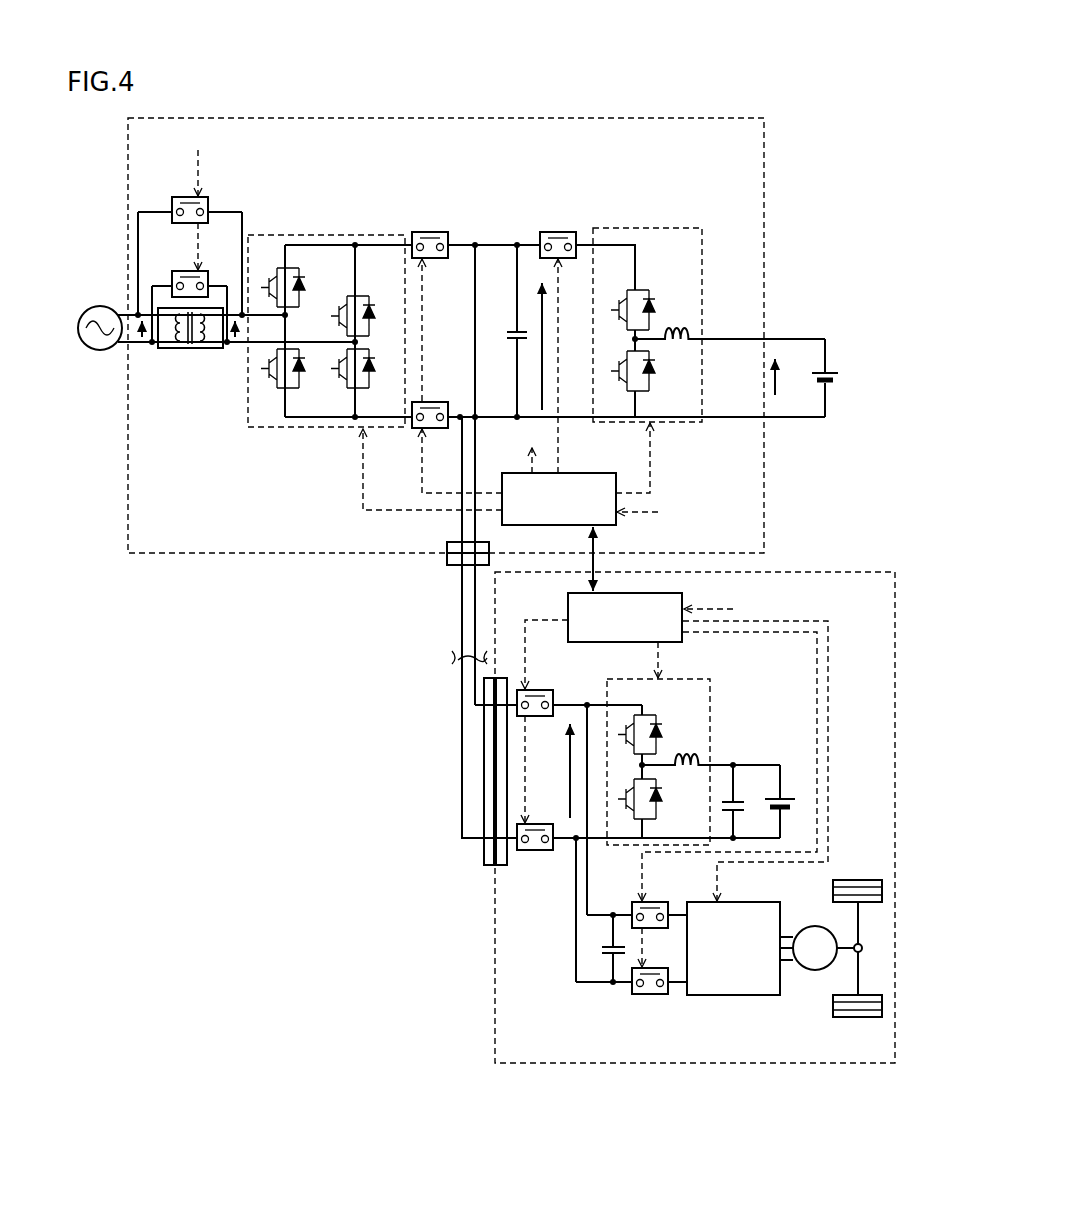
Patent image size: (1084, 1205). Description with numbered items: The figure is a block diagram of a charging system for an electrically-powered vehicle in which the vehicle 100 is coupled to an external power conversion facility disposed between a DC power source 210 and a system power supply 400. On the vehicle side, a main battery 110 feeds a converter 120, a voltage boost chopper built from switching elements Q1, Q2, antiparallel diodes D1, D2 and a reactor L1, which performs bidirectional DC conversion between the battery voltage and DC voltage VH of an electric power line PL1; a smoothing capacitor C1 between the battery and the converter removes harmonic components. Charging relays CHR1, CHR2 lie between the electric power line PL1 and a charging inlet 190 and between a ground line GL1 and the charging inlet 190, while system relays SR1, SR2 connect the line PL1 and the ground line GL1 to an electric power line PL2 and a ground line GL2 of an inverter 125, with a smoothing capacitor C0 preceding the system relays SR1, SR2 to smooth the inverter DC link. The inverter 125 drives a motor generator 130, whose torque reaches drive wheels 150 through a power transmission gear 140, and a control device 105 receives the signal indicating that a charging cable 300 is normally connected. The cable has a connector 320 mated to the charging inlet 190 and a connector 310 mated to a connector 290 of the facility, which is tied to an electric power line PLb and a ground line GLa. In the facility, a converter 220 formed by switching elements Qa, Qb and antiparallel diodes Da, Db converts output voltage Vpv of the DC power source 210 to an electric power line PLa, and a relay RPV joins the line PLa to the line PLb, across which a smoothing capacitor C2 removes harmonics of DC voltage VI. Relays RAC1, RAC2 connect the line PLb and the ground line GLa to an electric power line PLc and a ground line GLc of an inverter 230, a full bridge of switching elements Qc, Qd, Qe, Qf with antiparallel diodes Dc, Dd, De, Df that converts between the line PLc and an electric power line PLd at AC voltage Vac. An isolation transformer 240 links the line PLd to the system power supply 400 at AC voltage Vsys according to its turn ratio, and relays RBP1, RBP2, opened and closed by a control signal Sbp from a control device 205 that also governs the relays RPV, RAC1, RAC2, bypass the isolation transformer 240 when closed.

The system power supply 400 is at (100, 350).
The isolation transformer 240 is at (190, 348).
The inverter 230 is at (330, 309).
The converter 220 is at (709, 339).
The DC power source 210 is at (827, 373).
The control device 205 is at (558, 525).
The connector 290 is at (447, 548).
The connector 310 is at (447, 559).
The charging cable 300 is at (452, 660).
The electrically-powered vehicle 100 is at (772, 1064).
The control device 105 is at (628, 593).
The connector 320 is at (487, 866).
The charging inlet 190 is at (504, 866).
The converter 120 is at (693, 762).
The main battery 110 is at (786, 798).
The inverter 125 is at (735, 996).
The motor generator 130 is at (817, 972).
The power transmission gear 140 is at (876, 932).
The drive wheels 150 is at (873, 1018).
The relay RBP1 is at (186, 197).
The relay RBP2 is at (186, 271).
The relay RAC1 is at (431, 232).
The relay RAC2 is at (440, 402).
The relay RPV is at (553, 232).
The charging relay CHR1 is at (540, 690).
The charging relay CHR2 is at (547, 850).
The system relay SR1 is at (654, 929).
The system relay SR2 is at (638, 995).
The smoothing capacitor C0 is at (605, 957).
The smoothing capacitor C1 is at (740, 801).
The smoothing capacitor C2 is at (512, 339).
The reactor L1 is at (686, 746).
The switching element Q1 is at (618, 735).
The switching element Q2 is at (618, 800).
The antiparallel diode D1 is at (657, 723).
The antiparallel diode D2 is at (664, 806).
The switching element Qa is at (611, 311).
The switching element Qb is at (611, 372).
The antiparallel diode Da is at (652, 300).
The antiparallel diode Db is at (655, 375).
The switching element Qc is at (262, 288).
The switching element Qd is at (262, 370).
The switching element Qe is at (332, 316).
The switching element Qf is at (332, 370).
The antiparallel diode Dc is at (301, 292).
The antiparallel diode Dd is at (301, 374).
The antiparallel diode De is at (372, 306).
The antiparallel diode Df is at (372, 374).
The electric power line PL1 is at (595, 704).
The ground line GL1 is at (590, 840).
The electric power line PL2 is at (678, 912).
The ground line GL2 is at (677, 985).
The electric power line PLa is at (585, 244).
The ground line GLa is at (717, 418).
The electric power line PLb is at (493, 244).
The electric power line PLc is at (322, 245).
The electric power line PLd is at (262, 344).
The ground line GLc is at (298, 428).
The control signal Sbp is at (365, 299).
The AC voltage Vsys is at (143, 345).
The AC voltage Vac is at (236, 345).
The DC voltage VI is at (542, 346).
The DC voltage Vpv is at (796, 386).
The DC voltage VH is at (553, 771).